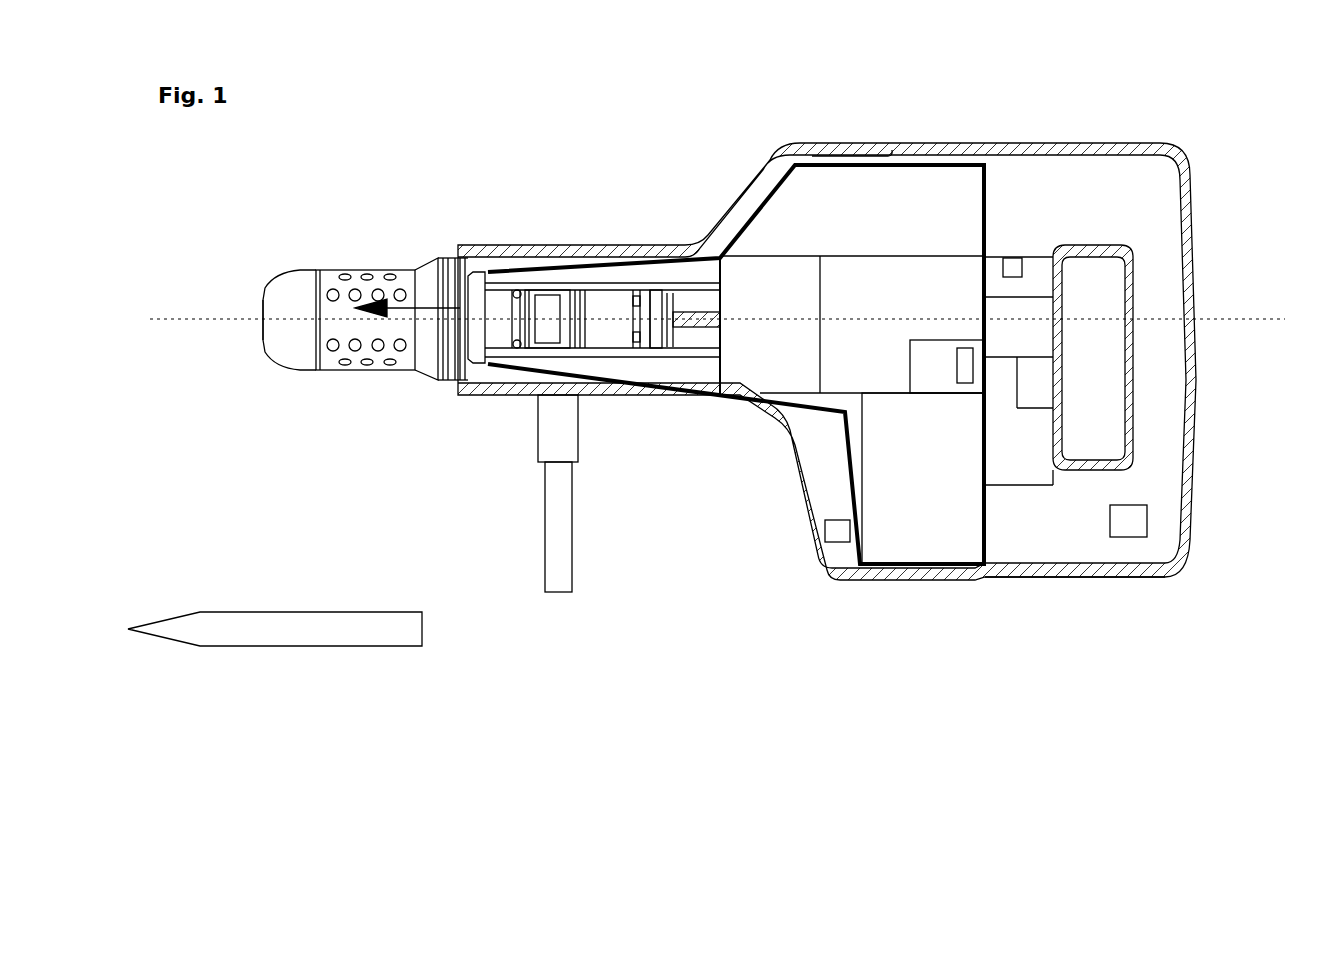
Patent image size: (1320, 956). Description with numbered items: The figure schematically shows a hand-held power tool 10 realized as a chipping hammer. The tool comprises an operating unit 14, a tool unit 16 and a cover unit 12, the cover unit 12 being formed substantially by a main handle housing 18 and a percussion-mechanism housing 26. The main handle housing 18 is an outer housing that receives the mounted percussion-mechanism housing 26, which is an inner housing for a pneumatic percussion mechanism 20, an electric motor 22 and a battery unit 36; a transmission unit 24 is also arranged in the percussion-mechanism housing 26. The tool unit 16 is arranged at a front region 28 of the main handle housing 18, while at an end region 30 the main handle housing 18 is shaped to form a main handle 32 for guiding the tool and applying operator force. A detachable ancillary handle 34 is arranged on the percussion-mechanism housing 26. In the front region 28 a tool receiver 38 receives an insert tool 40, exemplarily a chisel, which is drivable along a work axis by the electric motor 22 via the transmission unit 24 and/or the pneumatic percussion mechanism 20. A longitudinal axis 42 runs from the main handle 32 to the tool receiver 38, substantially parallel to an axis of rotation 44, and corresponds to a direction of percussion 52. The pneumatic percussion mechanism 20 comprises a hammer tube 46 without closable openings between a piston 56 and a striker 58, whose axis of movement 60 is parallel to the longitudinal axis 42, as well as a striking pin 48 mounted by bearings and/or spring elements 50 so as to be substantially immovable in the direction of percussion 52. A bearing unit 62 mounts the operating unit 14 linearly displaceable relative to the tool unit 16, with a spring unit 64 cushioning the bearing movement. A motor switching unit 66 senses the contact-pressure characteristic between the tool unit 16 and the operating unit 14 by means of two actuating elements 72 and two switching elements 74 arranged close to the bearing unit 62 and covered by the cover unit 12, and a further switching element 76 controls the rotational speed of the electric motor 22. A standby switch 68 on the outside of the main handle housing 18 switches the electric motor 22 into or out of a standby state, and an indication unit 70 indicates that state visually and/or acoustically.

The hand-held power tool 10 is at (374, 170).
The cover unit 12 is at (795, 602).
The operating unit 14 is at (1180, 127).
The tool unit 16 is at (462, 158).
The main handle housing 18 is at (640, 395).
The pneumatic percussion mechanism 20 is at (465, 470).
The electric motor 22 is at (895, 295).
The transmission unit 24 is at (792, 360).
The percussion-mechanism housing 26 is at (612, 268).
The front region 28 is at (340, 232).
The end region 30 is at (1205, 602).
The main handle 32 is at (1158, 383).
The ancillary handle 34 is at (562, 578).
The battery unit 36 is at (900, 515).
The tool receiver 38 is at (275, 405).
The insert tool 40 is at (240, 630).
The longitudinal axis 42 is at (1243, 319).
The axis of rotation 44 is at (238, 303).
The hammer tube 46 is at (613, 330).
The striking pin 48 is at (500, 330).
The spring elements 50 is at (378, 420).
The direction of percussion 52 is at (428, 302).
The piston 56 is at (657, 353).
The striker 58 is at (520, 288).
The axis of movement 60 is at (550, 320).
The bearing unit 62 is at (1002, 465).
The spring unit 64 is at (1042, 270).
The motor switching unit 66 is at (933, 372).
The standby switch 68 is at (1140, 522).
The indication unit 70 is at (975, 602).
The actuating elements 72 is at (822, 148).
The switching elements 74 is at (1012, 262).
The further switching element 76 is at (962, 350).